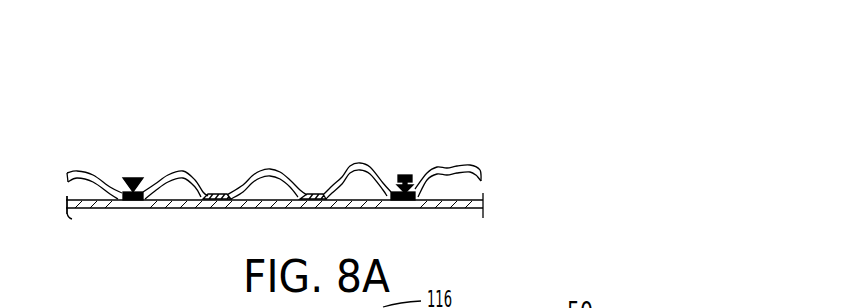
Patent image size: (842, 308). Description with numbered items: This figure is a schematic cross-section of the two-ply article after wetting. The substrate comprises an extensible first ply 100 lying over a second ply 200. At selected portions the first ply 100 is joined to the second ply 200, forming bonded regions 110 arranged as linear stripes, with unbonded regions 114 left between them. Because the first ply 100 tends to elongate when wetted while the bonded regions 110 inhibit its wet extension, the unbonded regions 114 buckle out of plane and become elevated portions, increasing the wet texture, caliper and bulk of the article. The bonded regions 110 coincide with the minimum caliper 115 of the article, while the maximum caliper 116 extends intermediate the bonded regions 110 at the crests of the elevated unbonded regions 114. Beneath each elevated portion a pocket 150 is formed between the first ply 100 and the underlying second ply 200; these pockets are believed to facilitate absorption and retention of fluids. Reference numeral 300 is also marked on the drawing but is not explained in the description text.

The first ply 100 is at (478, 168).
The bonded regions 110 is at (132, 178).
The unbonded regions 114 is at (265, 155).
The minimum caliper regions 115 is at (146, 179).
The maximum caliper regions 116 is at (359, 144).
The pockets 150 is at (371, 186).
The second ply 200 is at (465, 204).
The assembly 300 is at (133, 204).